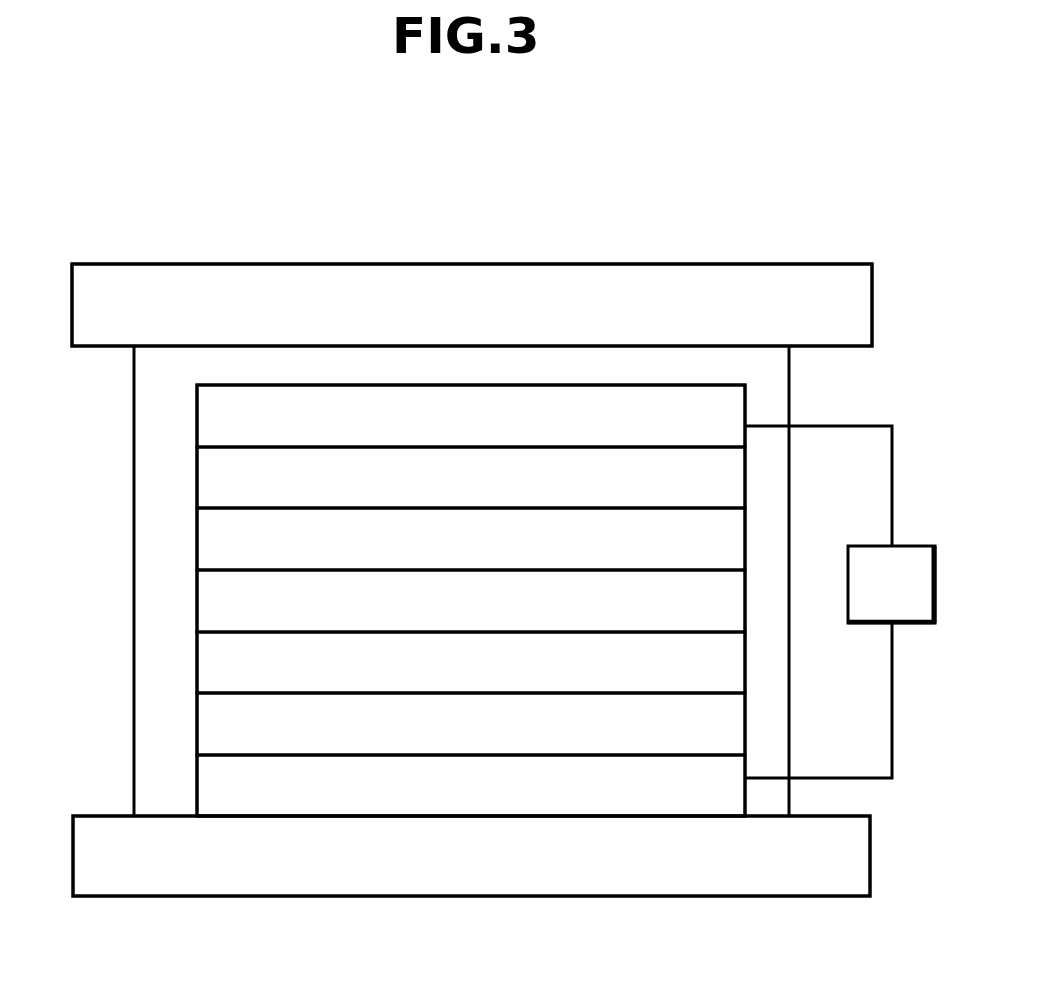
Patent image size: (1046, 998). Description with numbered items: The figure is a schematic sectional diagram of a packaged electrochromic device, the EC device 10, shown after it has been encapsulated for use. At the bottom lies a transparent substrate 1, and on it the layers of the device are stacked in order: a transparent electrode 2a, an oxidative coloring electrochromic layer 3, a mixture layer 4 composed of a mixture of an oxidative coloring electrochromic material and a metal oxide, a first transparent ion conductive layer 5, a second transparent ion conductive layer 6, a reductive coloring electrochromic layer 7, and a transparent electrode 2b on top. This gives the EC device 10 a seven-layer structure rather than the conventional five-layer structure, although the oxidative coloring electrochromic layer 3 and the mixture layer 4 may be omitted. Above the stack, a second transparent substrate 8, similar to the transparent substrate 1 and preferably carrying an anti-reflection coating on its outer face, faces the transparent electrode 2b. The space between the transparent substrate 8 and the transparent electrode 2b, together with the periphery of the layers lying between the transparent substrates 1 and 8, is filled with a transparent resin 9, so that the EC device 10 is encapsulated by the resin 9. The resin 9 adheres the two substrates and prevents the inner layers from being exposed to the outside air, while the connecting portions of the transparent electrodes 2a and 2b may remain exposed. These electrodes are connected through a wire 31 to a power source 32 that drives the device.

The transparent substrate 1 is at (705, 877).
The transparent electrode 2a is at (220, 788).
The transparent electrode 2b is at (228, 407).
The oxidative coloring electrochromic layer 3 is at (220, 726).
The mixture layer 4 is at (220, 664).
The first transparent ion conductive layer 5 is at (222, 606).
The second transparent ion conductive layer 6 is at (222, 538).
The reductive coloring electrochromic layer 7 is at (218, 480).
The transparent substrate 8 is at (675, 302).
The transparent resin 9 is at (759, 523).
The EC device 10 is at (557, 257).
The wire 31 is at (842, 426).
The power source 32 is at (903, 560).